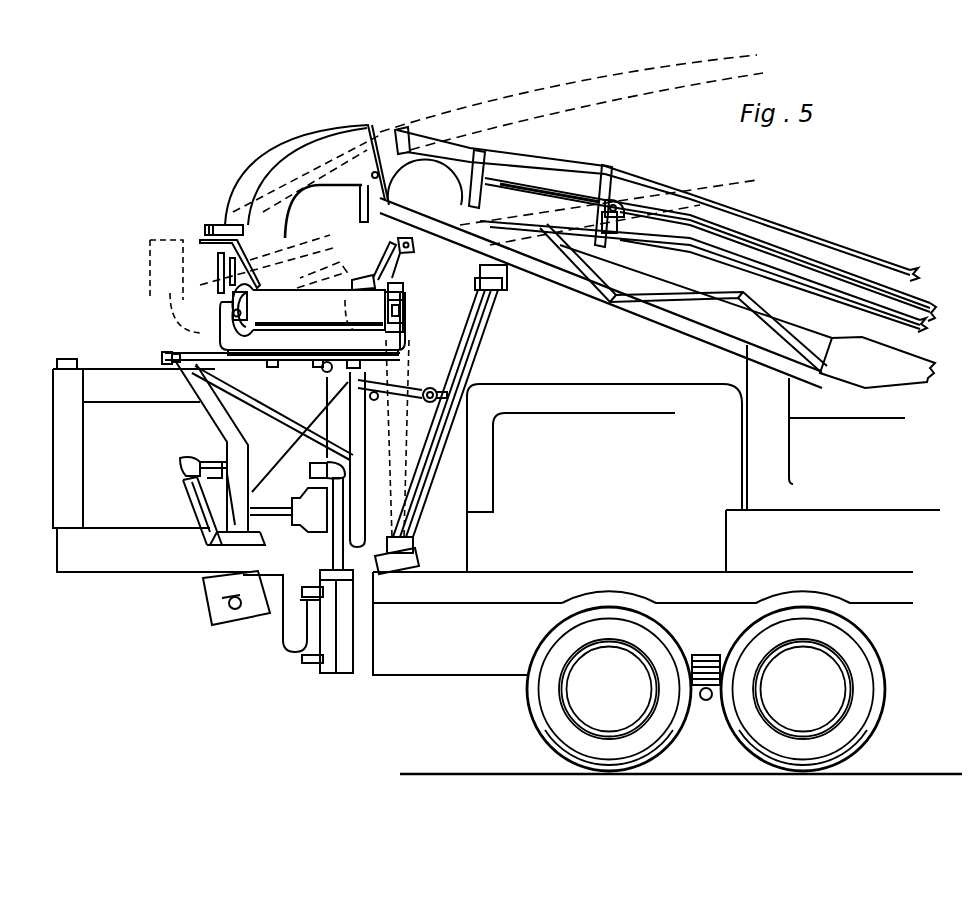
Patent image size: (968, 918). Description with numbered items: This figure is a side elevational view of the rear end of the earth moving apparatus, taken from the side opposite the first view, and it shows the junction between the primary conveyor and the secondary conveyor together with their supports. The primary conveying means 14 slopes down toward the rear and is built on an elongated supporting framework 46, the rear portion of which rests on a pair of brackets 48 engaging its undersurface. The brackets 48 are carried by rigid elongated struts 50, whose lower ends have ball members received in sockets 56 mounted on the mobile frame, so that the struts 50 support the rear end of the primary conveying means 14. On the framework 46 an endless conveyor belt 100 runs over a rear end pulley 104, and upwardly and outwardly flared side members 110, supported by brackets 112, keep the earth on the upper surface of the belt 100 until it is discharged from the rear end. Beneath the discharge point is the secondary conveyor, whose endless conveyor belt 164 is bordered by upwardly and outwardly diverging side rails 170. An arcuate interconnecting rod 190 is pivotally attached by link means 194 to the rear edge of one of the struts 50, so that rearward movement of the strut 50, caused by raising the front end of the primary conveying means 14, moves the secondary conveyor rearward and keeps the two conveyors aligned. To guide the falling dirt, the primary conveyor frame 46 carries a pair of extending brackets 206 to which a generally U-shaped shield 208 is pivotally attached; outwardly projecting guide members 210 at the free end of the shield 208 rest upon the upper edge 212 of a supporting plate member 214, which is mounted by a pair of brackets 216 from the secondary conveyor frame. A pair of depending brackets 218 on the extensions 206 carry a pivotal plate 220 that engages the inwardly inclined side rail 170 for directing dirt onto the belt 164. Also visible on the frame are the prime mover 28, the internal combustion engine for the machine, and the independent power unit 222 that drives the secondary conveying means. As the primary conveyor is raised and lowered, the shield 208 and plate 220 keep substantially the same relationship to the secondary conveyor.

The primary conveying means 14 is at (772, 227).
The prime mover 28 is at (552, 430).
The supporting framework 46 is at (647, 307).
The brackets 48 is at (502, 282).
The struts 50 is at (473, 365).
The sockets 56 is at (410, 563).
The endless conveyor belt 100 is at (790, 258).
The rear end pulley 104 is at (425, 182).
The side members 110 is at (869, 260).
The brackets 112 is at (599, 185).
The endless conveyor belt 164 is at (297, 345).
The side rails 170 is at (396, 283).
The arcuate interconnecting rod 190 is at (412, 387).
The link means 194 is at (447, 394).
The extending brackets 206 is at (355, 187).
The U-shaped shield 208 is at (267, 183).
The guide members 210 is at (218, 227).
The upper edge 212 is at (203, 252).
The supporting plate member 214 is at (212, 255).
The brackets 216 is at (217, 282).
The depending brackets 218 is at (408, 245).
The pivotal plate 220 is at (382, 266).
The independent power unit 222 is at (96, 362).